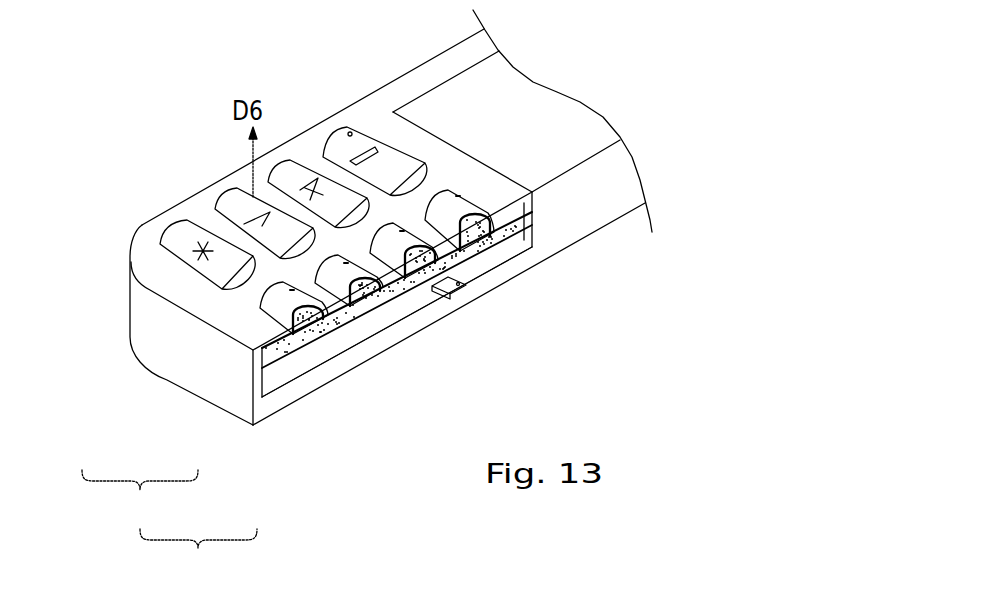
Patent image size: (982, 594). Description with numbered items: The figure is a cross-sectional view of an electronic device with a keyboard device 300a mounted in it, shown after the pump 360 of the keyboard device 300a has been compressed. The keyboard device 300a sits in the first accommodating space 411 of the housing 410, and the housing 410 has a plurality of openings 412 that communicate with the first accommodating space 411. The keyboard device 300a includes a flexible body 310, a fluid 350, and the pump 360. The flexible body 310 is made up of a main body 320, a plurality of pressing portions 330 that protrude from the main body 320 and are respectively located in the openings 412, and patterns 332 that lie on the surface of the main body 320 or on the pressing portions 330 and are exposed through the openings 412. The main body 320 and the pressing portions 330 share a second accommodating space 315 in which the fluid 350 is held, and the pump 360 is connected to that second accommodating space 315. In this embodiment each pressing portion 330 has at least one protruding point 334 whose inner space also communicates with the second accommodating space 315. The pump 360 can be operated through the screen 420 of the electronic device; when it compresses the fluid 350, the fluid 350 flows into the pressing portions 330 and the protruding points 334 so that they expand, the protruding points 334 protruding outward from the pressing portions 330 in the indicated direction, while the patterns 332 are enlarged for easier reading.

The keyboard device 300a is at (198, 556).
The flexible body 310 is at (140, 498).
The second accommodating space 315 is at (334, 341).
The main body 320 is at (287, 365).
The pressing portions 330 is at (187, 268).
The patterns 332 is at (314, 178).
The protruding point 334 is at (350, 131).
The fluid 350 is at (316, 340).
The pump 360 is at (458, 284).
The housing 410 is at (167, 233).
The first accommodating space 411 is at (507, 262).
The openings 412 is at (201, 184).
The screen 420 is at (532, 100).